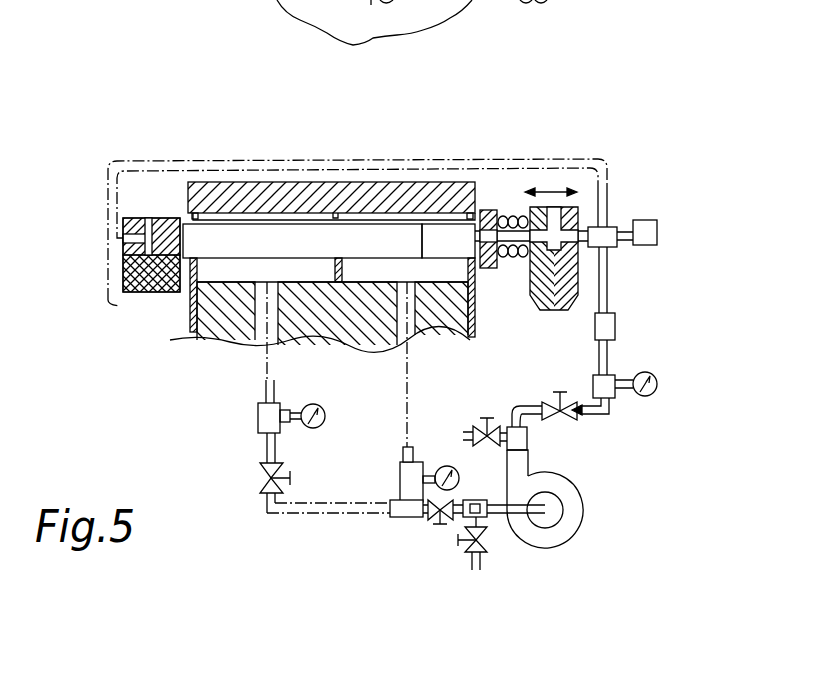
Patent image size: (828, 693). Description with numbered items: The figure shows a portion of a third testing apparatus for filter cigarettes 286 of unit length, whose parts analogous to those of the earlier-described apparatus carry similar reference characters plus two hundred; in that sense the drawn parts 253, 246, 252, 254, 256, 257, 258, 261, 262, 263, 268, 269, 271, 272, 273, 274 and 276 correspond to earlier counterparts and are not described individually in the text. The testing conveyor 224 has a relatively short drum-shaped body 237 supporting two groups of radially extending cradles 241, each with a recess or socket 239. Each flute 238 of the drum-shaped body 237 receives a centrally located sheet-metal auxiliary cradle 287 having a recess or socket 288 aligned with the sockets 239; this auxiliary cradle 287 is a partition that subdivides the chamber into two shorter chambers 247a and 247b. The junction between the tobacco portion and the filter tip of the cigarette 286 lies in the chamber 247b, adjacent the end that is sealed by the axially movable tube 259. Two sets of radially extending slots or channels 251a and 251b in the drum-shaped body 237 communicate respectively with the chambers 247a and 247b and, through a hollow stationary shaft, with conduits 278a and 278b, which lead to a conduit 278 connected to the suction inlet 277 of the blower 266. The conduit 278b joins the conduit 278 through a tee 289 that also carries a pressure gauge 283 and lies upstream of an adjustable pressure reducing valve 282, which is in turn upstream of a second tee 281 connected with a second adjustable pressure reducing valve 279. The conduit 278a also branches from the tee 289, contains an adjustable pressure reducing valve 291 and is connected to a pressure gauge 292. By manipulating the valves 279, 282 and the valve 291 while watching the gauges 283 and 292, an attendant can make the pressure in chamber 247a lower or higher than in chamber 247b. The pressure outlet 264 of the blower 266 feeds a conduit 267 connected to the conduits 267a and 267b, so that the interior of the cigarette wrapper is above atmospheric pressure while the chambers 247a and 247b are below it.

The testing conveyor 224 is at (127, 128).
The housing outline 253 is at (158, 220).
The conduit 267a is at (197, 168).
The cylinder cover 246 is at (227, 187).
The recess or socket 239 is at (190, 213).
The chamber 247a is at (280, 205).
The chamber 247b is at (438, 182).
The auxiliary cradle 287 is at (383, 237).
The filter cigarette 286 is at (408, 203).
The recess or socket 288 is at (343, 262).
The flute 238 is at (303, 268).
The drum-shaped body 237 is at (366, 343).
The radially extending cradle 241 is at (186, 306).
The slot or channel 251a is at (260, 347).
The slot or channel 251b is at (412, 322).
The end cap 252 is at (157, 290).
The cap insert 254 is at (130, 259).
The port 256 is at (148, 218).
The axially movable tube 259 is at (492, 212).
The spring 258 is at (510, 213).
The stroke direction 257 is at (548, 180).
The valve body 263 is at (565, 207).
The valve seat 262 is at (577, 265).
The valve member 261 is at (540, 278).
The conduit 267b is at (610, 198).
The tee fitting 274 is at (605, 222).
The pressure switch 276 is at (652, 228).
The throttle 273 is at (616, 320).
The conduit 267 is at (608, 352).
The pressure gauge 272 is at (658, 375).
The elbow fitting 271 is at (604, 415).
The shut-off valve 268 is at (497, 425).
The pressure outlet 264 is at (527, 454).
The valve 269 is at (527, 436).
The suction inlet 277 is at (558, 517).
The blower 266 is at (597, 506).
The second tee 281 is at (471, 517).
The second adjustable pressure reducing valve 279 is at (487, 545).
The adjustable pressure reducing valve 282 is at (438, 521).
The conduit 278 is at (458, 513).
The tee 289 is at (400, 517).
The conduit 278b is at (414, 451).
The pressure gauge 283 is at (458, 470).
The conduit 278a is at (277, 447).
The adjustable pressure reducing valve 291 is at (262, 487).
The pressure gauge 292 is at (326, 414).